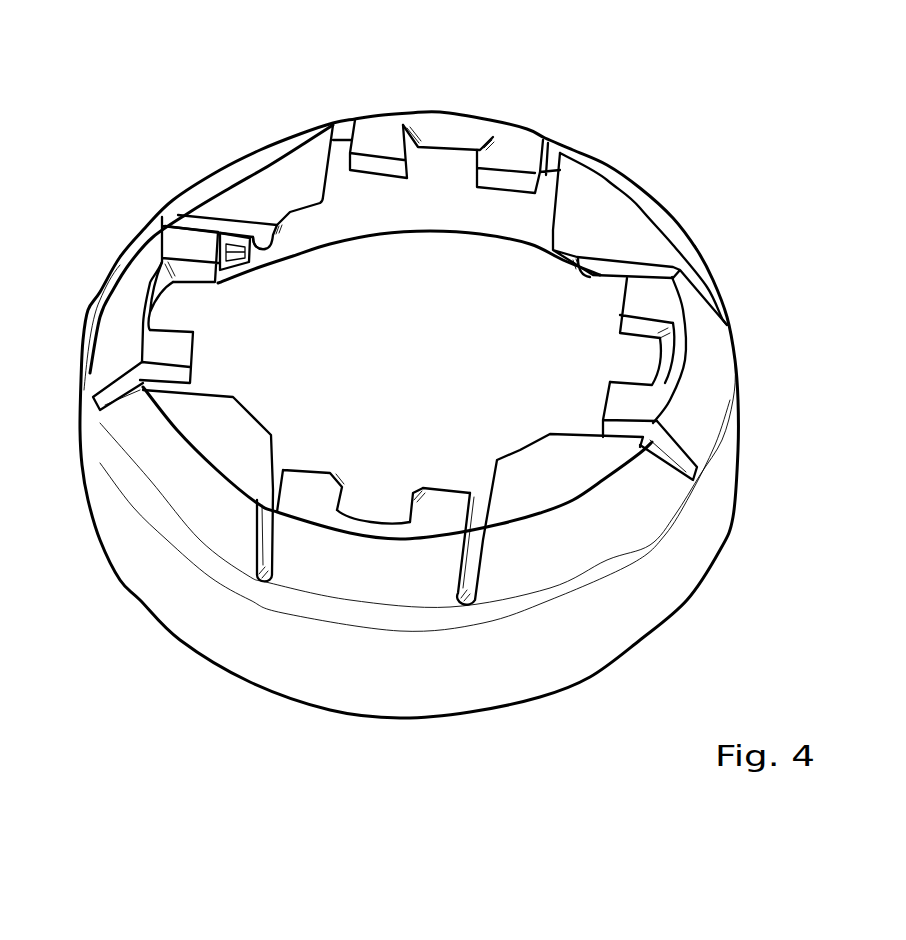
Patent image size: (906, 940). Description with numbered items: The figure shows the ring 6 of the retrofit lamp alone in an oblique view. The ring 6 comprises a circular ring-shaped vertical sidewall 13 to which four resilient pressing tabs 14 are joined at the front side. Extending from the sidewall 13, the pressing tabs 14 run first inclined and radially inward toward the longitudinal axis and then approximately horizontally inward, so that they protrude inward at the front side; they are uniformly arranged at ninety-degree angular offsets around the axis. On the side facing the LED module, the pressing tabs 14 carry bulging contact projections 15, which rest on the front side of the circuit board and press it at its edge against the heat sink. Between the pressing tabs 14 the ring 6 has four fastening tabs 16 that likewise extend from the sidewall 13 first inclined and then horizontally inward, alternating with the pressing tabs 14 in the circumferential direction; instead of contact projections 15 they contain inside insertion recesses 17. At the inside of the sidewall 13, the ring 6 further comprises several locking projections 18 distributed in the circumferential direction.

The ring 6 is at (103, 90).
The sidewall 13 is at (700, 547).
The pressing tab 14 is at (246, 176).
The contact projection 15 is at (266, 242).
The fastening tab 16 is at (520, 148).
The insertion recess 17 is at (447, 140).
The locking projection 18 is at (247, 264).